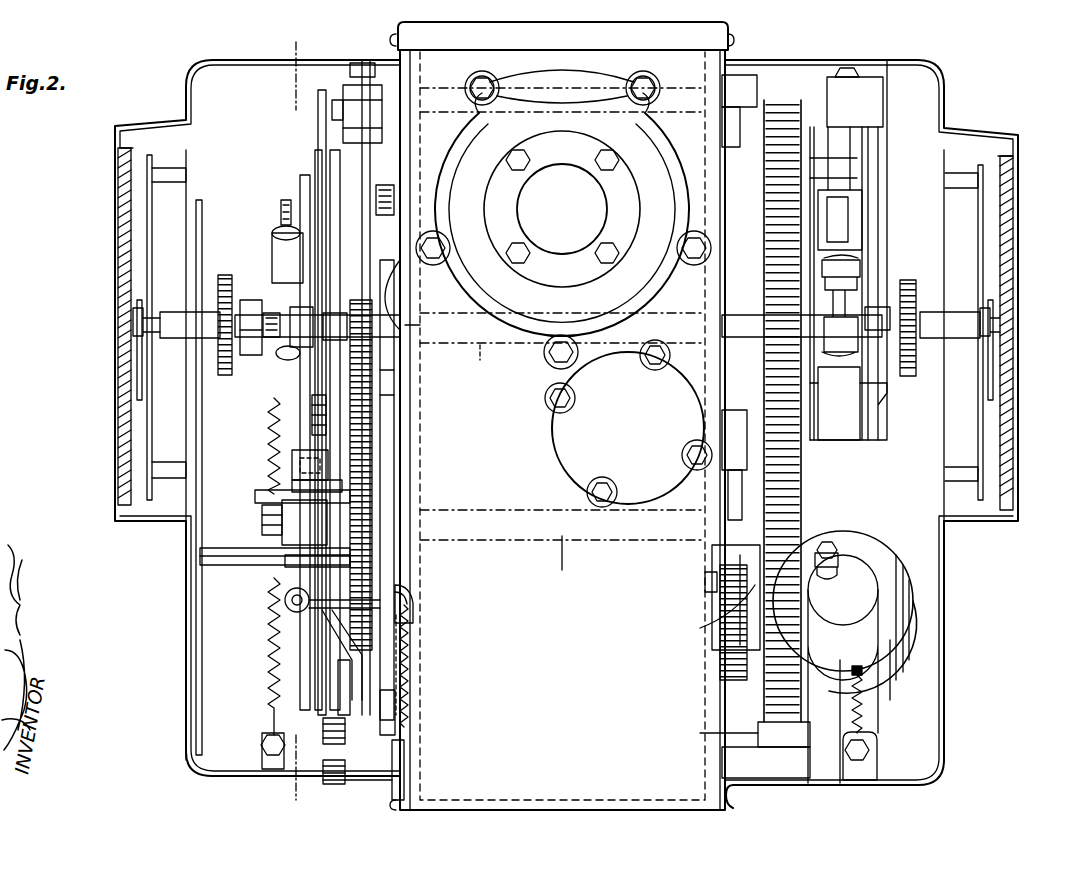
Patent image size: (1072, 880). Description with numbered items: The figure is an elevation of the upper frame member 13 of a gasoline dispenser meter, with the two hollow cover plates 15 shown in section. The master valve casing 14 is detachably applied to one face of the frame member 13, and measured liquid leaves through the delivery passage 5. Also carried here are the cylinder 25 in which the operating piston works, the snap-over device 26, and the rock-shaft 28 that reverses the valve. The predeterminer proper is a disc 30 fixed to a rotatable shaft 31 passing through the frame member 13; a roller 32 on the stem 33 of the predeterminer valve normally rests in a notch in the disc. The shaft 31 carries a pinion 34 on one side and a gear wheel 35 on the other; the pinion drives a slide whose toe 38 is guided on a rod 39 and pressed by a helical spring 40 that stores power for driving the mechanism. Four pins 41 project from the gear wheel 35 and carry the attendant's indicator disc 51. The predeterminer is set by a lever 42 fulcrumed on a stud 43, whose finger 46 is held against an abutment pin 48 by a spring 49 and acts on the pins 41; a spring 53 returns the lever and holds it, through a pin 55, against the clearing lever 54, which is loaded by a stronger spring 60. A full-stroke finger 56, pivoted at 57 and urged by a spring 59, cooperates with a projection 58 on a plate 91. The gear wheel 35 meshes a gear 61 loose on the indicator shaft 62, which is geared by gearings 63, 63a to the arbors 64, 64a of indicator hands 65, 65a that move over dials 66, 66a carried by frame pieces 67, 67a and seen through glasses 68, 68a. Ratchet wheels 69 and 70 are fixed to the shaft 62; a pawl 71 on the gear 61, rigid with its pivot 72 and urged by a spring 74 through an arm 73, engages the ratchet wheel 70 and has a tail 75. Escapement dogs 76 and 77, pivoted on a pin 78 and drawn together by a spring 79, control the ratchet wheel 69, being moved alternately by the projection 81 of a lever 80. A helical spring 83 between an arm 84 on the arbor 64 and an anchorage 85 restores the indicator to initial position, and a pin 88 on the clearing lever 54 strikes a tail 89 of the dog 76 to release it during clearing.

The delivery passage 5 is at (293, 416).
The upper frame member 13 is at (562, 416).
The master valve casing 14 is at (915, 680).
The hollow cover plate 15 is at (228, 62).
The cylinder 25 is at (581, 78).
The snap-over device 26 is at (880, 155).
The rock-shaft 28 is at (740, 290).
The predeterminer disc 30 is at (712, 488).
The rotatable shaft 31 is at (568, 561).
The roller 32 is at (720, 640).
The stem 33 is at (835, 560).
The pinion 34 is at (801, 470).
The gear wheel 35 is at (372, 575).
The toe 38 is at (720, 735).
The rod 39 is at (762, 394).
The helical spring 40 is at (745, 685).
The pins 41 is at (372, 445).
The setting lever 42 is at (265, 640).
The stud 43 is at (262, 522).
The finger 46 is at (305, 450).
The abutment pin 48 is at (255, 500).
The spring 49 is at (262, 580).
The disc 51 is at (196, 650).
The spring 53 is at (298, 612).
The clearing lever 54 is at (412, 650).
The pin 55 is at (345, 772).
The full-stroke finger 56 is at (395, 700).
The pivot 57 is at (345, 730).
The projection 58 is at (404, 775).
The spring 59 is at (412, 675).
The spring 60 is at (413, 588).
The gear 61 is at (410, 300).
The indicator shaft 62 is at (490, 362).
The gearing 63 is at (225, 275).
The gearing 63a is at (908, 280).
The arbor 64 is at (138, 318).
The arbor 64a is at (998, 325).
The indicator hand 65 is at (140, 390).
The indicator hand 65a is at (993, 410).
The dial 66 is at (150, 462).
The dial 66a is at (983, 470).
The frame piece 67 is at (194, 195).
The frame piece 67a is at (944, 420).
The glass 68 is at (118, 230).
The glass 68a is at (1012, 240).
The ratchet wheel 69 is at (305, 415).
The ratchet wheel 70 is at (360, 445).
The pawl 71 is at (330, 280).
The pivot 72 is at (300, 310).
The arm 73 is at (378, 195).
The spring 74 is at (420, 224).
The tail 75 is at (396, 400).
The escapement dog 76 is at (330, 175).
The escapement dog 77 is at (300, 268).
The pin 78 is at (282, 200).
The spring 79 is at (282, 226).
The lever 80 is at (352, 162).
The projection 81 is at (325, 178).
The helical spring 83 is at (300, 613).
The arm 84 is at (252, 355).
The anchorage 85 is at (262, 732).
The pin 88 is at (347, 350).
The tail 89 is at (420, 326).
The plate 91 is at (395, 795).